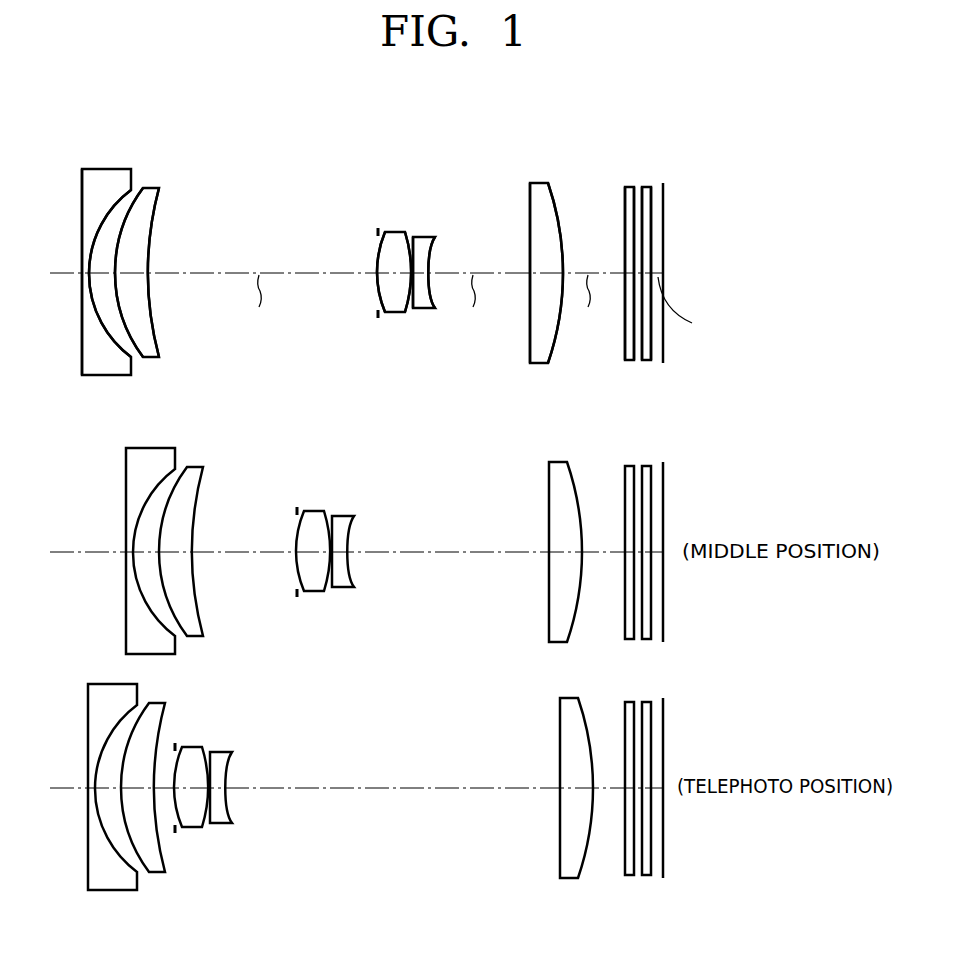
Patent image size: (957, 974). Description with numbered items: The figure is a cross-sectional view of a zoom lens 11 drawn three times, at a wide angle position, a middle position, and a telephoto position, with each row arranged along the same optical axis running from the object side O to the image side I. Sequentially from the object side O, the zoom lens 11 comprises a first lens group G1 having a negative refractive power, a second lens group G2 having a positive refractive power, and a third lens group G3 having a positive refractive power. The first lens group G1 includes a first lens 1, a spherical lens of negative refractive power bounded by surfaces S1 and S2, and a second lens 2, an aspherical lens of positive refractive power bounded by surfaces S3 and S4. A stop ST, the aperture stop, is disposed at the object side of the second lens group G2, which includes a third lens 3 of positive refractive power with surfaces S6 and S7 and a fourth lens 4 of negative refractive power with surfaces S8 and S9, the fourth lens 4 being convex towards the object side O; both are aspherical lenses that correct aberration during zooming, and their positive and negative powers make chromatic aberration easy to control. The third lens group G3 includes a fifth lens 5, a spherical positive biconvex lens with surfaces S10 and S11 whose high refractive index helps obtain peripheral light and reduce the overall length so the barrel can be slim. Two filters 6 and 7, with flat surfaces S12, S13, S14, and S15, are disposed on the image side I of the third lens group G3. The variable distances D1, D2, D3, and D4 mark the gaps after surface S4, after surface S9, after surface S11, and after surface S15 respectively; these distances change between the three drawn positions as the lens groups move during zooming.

The first lens 1 is at (106, 375).
The second lens 2 is at (152, 358).
The third lens 3 is at (397, 313).
The fourth lens 4 is at (425, 313).
The fifth lens 5 is at (540, 363).
The filter 6 is at (628, 360).
The filter 7 is at (647, 360).
The zoom lens 11 is at (271, 193).
The first lens group G1 is at (164, 132).
The second lens group G2 is at (438, 132).
The third lens group G3 is at (572, 132).
The stop ST is at (378, 228).
The lens surface S1 is at (82, 217).
The lens surface S2 is at (113, 207).
The lens surface S3 is at (130, 216).
The lens surface S4 is at (152, 233).
The lens surface S6 is at (378, 260).
The lens surface S7 is at (406, 244).
The lens surface S8 is at (423, 240).
The lens surface S9 is at (432, 255).
The lens surface S10 is at (530, 197).
The lens surface S11 is at (560, 217).
The lens surface S12 is at (625, 243).
The lens surface S13 is at (633, 207).
The lens surface S14 is at (644, 196).
The lens surface S15 is at (655, 210).
The variable distance D1 is at (259, 304).
The variable distance D2 is at (472, 303).
The variable distance D3 is at (589, 303).
The variable distance D4 is at (682, 314).
The object side O is at (343, 273).
The image side I is at (779, 273).